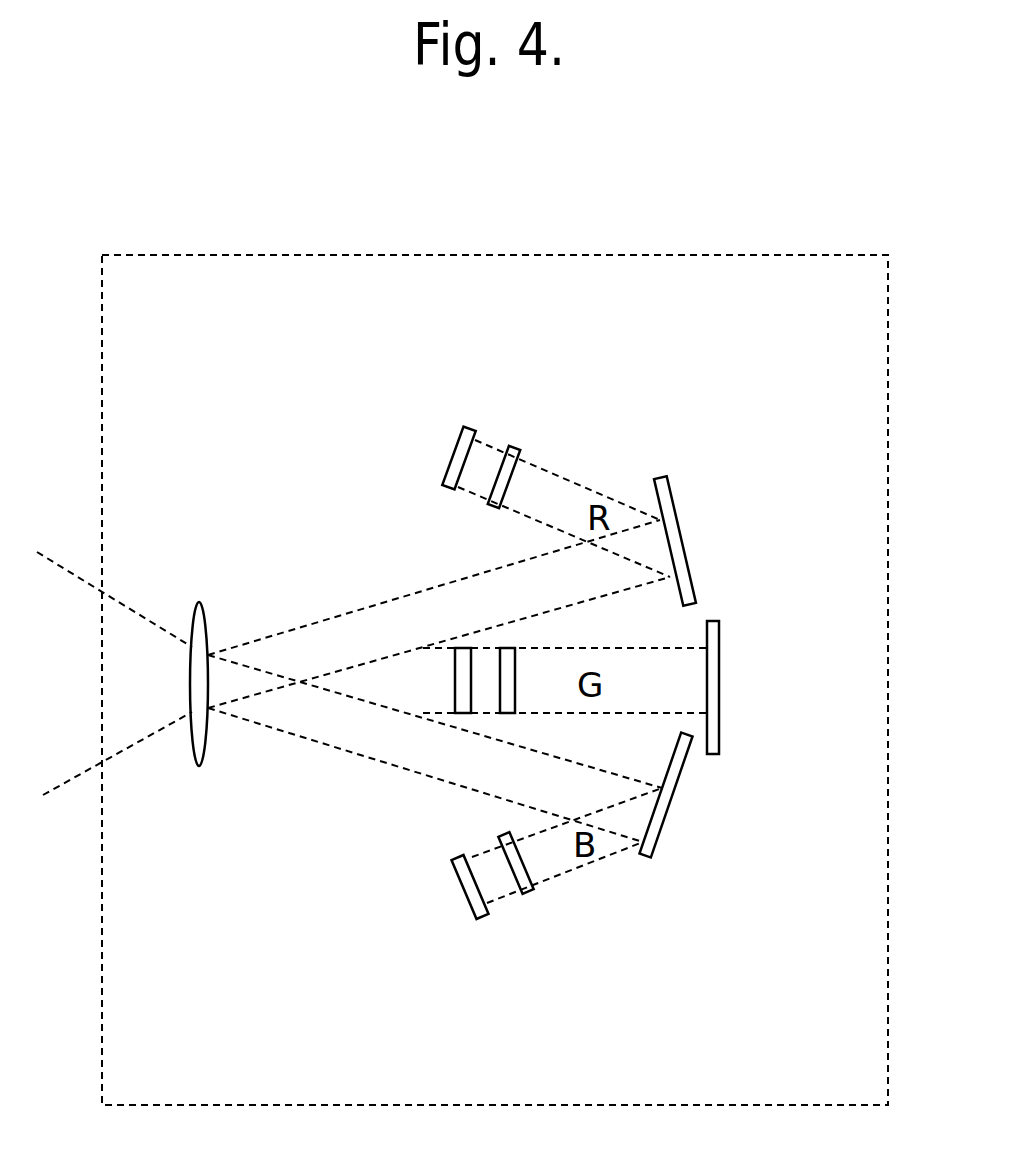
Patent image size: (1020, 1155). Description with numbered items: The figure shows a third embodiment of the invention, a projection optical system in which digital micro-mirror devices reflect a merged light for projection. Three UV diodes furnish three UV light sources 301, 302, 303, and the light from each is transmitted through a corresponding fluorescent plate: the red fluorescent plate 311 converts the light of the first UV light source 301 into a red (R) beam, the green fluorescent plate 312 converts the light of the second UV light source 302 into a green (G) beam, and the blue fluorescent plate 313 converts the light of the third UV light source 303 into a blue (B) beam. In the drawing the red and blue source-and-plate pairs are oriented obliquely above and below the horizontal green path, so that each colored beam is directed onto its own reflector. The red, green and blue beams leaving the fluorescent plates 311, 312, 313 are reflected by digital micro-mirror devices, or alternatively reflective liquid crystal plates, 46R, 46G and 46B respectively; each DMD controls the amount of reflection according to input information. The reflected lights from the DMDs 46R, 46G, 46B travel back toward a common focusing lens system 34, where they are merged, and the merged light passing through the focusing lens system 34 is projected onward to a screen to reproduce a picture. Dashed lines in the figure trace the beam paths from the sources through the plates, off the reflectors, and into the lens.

The focusing lens system 34 is at (199, 603).
The UV light source 301 is at (448, 460).
The UV light source 302 is at (460, 687).
The UV light source 303 is at (458, 880).
The red fluorescent plate 311 is at (510, 447).
The green fluorescent plate 312 is at (508, 658).
The blue fluorescent plate 313 is at (527, 903).
The DMD or reflective liquid crystal plate 46R is at (670, 482).
The DMD or reflective liquid crystal plate 46G is at (722, 708).
The DMD or reflective liquid crystal plate 46B is at (650, 862).